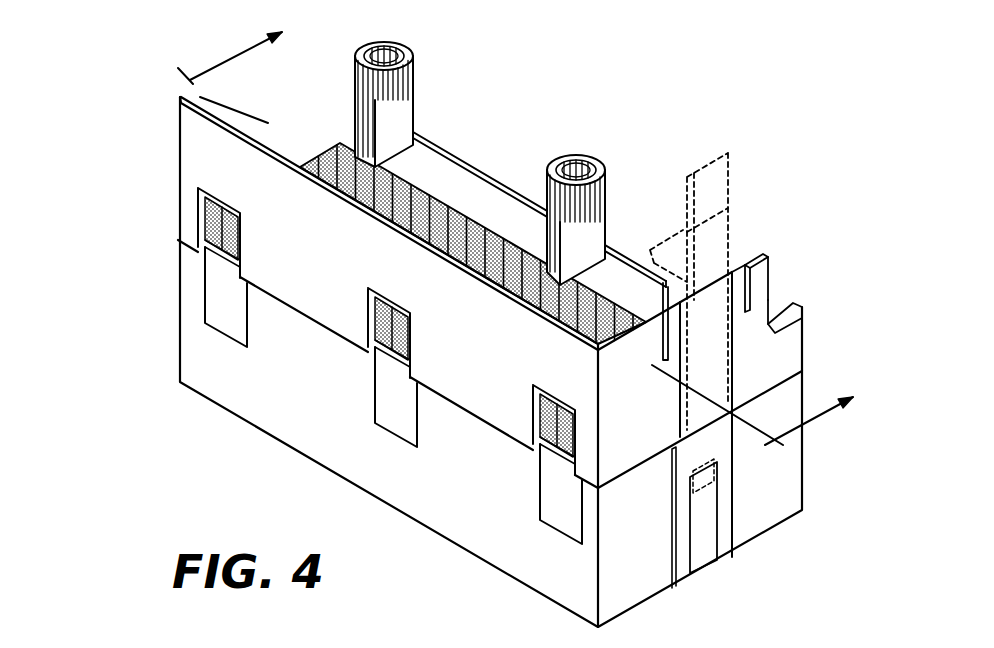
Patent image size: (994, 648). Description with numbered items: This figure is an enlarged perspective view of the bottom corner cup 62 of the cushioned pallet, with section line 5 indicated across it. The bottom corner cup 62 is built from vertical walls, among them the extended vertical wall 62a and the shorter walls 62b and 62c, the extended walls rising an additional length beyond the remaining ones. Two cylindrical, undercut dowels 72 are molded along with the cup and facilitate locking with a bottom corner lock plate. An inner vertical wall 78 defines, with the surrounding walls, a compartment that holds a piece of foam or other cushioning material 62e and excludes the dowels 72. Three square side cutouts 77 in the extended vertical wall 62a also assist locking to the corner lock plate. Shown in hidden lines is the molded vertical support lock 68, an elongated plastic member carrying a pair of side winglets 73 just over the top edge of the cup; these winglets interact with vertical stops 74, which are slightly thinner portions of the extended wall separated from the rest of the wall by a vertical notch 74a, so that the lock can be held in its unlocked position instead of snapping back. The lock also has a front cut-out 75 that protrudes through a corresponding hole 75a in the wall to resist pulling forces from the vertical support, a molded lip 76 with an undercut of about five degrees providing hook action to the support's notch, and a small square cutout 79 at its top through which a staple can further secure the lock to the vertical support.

The section line 5- 5 is at (527, 227).
The bottom corner cup 62 is at (148, 337).
The extended vertical wall 62a is at (227, 390).
The vertical wall 62b is at (312, 160).
The vertical wall 62c is at (497, 177).
The cushioning material 62e is at (405, 177).
The molded vertical support lock 68 is at (716, 153).
The dowels 72 is at (408, 47).
The side winglets 73 is at (746, 262).
The vertical stops 74 is at (690, 314).
The vertical notch 74a is at (757, 288).
The front cut-out 75 is at (712, 478).
The hole 75a is at (718, 466).
The molded lip 76 is at (660, 243).
The side cutouts 77 is at (228, 203).
The inner vertical wall 78 is at (620, 258).
The square cutout 79 is at (706, 192).